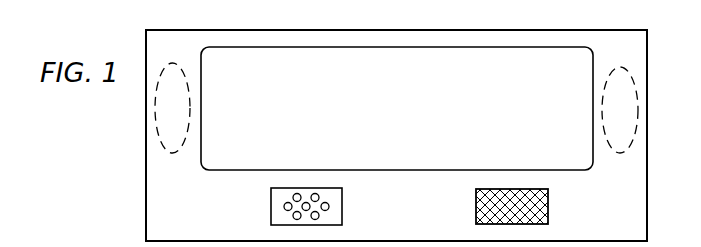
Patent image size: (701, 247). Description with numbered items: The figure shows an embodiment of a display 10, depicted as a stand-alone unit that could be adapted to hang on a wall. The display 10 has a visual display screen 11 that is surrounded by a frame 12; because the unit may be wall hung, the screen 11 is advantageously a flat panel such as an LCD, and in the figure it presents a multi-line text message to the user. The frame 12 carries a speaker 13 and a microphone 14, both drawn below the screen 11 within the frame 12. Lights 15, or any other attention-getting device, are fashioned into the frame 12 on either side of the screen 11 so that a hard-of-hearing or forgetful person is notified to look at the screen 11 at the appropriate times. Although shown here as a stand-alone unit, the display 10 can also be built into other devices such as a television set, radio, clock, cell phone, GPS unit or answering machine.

The display 10 is at (92, 155).
The visual display screen 11 is at (392, 170).
The frame 12 is at (146, 182).
The speaker 13 is at (548, 207).
The microphone 14 is at (271, 200).
The lights 15 is at (178, 150).